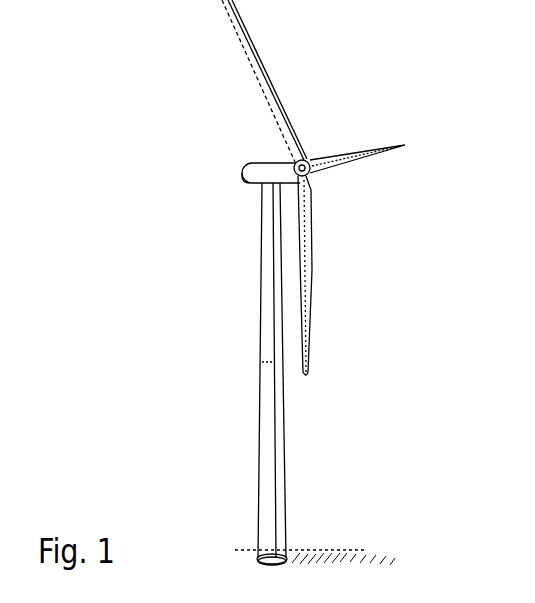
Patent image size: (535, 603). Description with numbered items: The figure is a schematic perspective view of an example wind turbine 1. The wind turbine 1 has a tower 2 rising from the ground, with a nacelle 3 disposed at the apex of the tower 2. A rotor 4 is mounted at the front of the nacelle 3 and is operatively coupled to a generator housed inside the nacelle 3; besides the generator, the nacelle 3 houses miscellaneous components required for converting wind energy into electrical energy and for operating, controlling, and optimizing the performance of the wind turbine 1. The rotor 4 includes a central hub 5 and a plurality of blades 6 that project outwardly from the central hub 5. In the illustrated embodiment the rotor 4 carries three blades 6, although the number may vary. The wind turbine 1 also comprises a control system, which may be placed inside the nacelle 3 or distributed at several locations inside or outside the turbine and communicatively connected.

The wind turbine 1 is at (430, 62).
The tower 2 is at (262, 400).
The nacelle 3 is at (243, 168).
The rotor 4 is at (376, 315).
The central hub 5 is at (310, 160).
The blades 6 is at (238, 35).